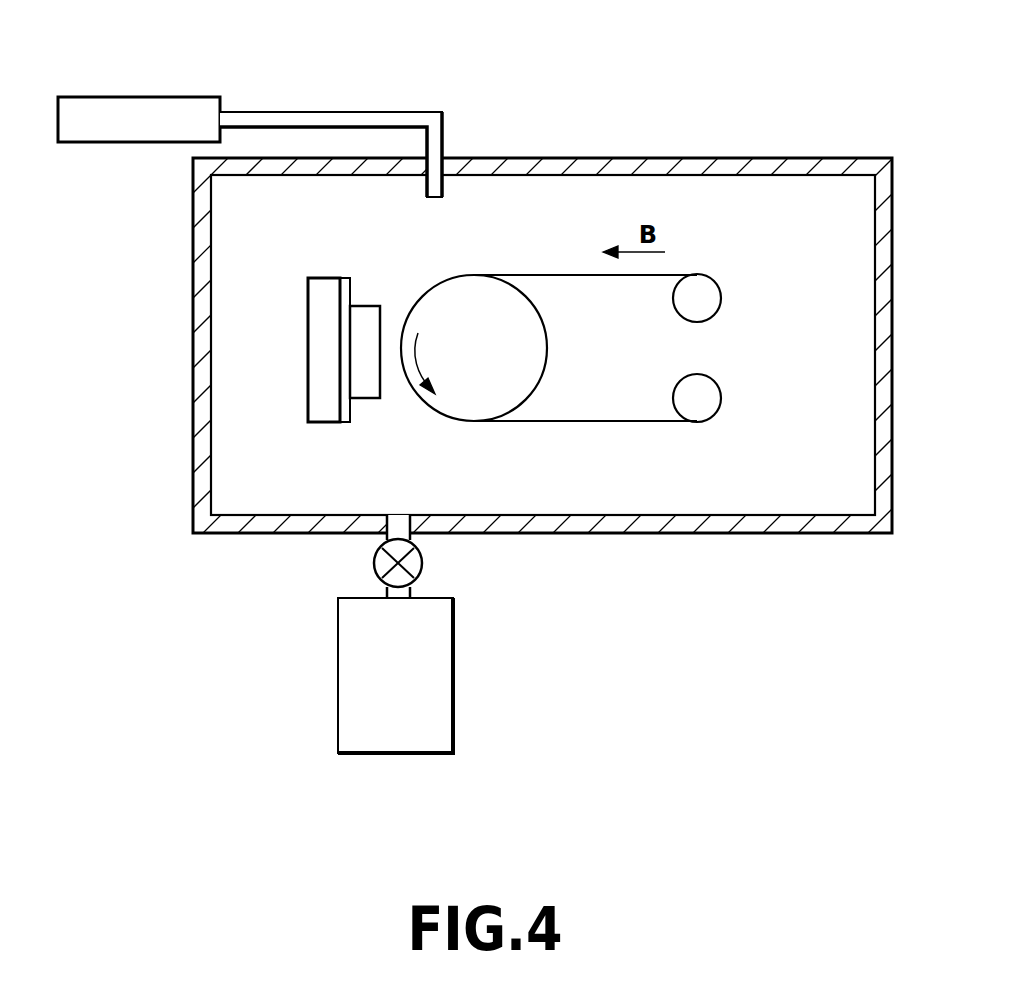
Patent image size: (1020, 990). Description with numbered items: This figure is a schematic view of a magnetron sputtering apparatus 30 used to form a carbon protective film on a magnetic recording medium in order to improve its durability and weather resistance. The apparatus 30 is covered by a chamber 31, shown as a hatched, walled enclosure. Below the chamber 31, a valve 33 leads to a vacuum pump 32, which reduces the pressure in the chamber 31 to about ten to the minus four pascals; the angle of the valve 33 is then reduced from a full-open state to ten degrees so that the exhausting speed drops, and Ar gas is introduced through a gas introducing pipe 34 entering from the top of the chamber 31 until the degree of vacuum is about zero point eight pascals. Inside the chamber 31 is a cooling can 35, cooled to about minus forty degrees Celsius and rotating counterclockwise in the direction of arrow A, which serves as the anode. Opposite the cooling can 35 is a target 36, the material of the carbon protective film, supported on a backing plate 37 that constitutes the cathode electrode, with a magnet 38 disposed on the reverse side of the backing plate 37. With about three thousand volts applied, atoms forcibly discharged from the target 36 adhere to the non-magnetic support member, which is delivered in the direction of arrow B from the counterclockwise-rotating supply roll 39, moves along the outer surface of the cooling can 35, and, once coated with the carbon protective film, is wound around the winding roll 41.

The magnetron sputtering apparatus 30 is at (660, 140).
The chamber 31 is at (795, 165).
The vacuum pump 32 is at (455, 675).
The valve 33 is at (423, 563).
The gas introducing pipe 34 is at (442, 131).
The cooling can 35 is at (467, 293).
The target 36 is at (365, 305).
The backing plate 37 is at (345, 278).
The magnet 38 is at (308, 340).
The supply roll 39 is at (711, 298).
The winding roll 41 is at (711, 395).